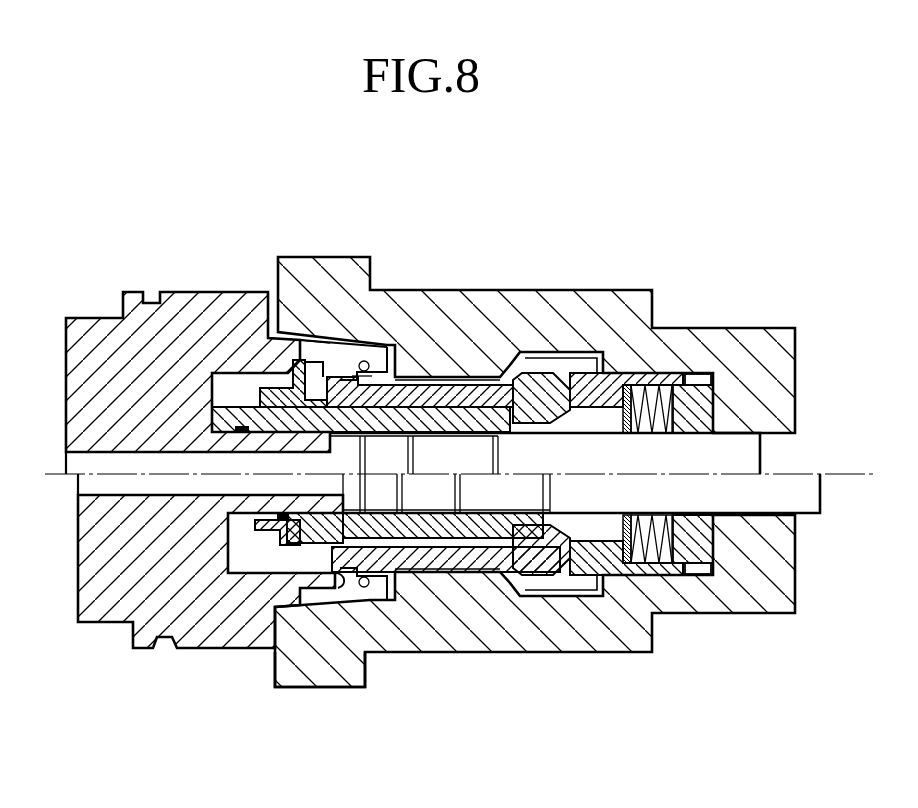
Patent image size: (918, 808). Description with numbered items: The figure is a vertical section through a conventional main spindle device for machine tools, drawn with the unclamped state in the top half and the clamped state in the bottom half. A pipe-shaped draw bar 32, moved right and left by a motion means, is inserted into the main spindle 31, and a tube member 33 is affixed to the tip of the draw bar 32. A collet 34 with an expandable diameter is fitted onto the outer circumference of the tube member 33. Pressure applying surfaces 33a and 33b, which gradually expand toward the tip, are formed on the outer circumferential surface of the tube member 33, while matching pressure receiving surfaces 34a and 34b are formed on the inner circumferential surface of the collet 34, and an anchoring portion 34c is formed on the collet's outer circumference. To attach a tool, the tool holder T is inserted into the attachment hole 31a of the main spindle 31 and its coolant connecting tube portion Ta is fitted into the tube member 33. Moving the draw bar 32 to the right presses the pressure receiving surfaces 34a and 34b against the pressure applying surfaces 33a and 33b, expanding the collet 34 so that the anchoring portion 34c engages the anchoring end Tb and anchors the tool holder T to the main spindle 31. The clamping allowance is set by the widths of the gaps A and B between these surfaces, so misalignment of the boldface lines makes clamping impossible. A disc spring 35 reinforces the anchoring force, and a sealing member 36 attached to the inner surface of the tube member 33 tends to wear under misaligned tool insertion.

The main spindle 31 is at (633, 290).
The attachment hole 31a is at (275, 608).
The draw bar 32 is at (728, 495).
The tube member 33 is at (490, 572).
The pressure applying surface 33a is at (305, 372).
The pressure applying surface 33b is at (512, 408).
The collet 34 is at (437, 580).
The pressure receiving surface 34a is at (336, 372).
The pressure receiving surface 34b is at (512, 365).
The anchoring portion 34c is at (330, 588).
The disc spring 35 is at (666, 560).
The sealing member 36 is at (262, 560).
The tool holder T is at (90, 317).
The coolant connecting tube portion Ta is at (237, 446).
The anchoring end Tb is at (352, 365).
The gap A is at (358, 372).
The gap B is at (395, 376).